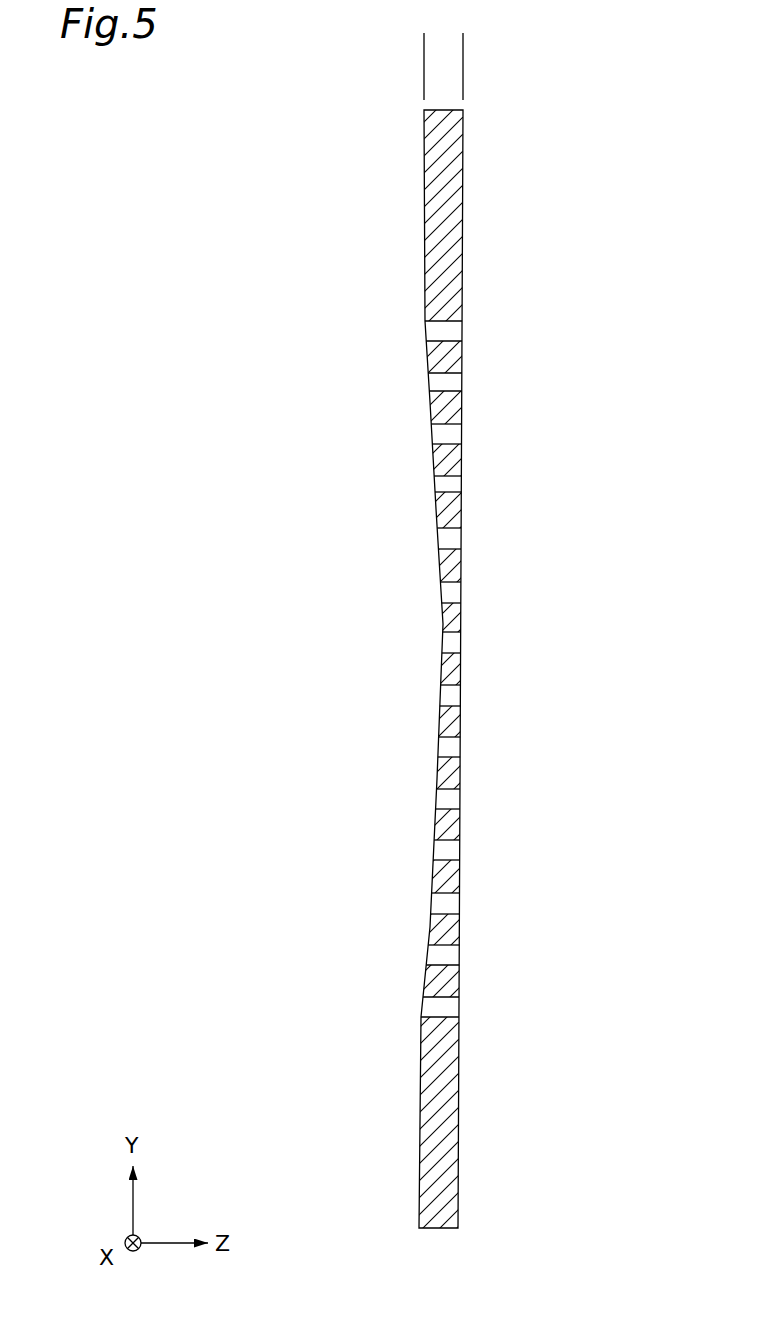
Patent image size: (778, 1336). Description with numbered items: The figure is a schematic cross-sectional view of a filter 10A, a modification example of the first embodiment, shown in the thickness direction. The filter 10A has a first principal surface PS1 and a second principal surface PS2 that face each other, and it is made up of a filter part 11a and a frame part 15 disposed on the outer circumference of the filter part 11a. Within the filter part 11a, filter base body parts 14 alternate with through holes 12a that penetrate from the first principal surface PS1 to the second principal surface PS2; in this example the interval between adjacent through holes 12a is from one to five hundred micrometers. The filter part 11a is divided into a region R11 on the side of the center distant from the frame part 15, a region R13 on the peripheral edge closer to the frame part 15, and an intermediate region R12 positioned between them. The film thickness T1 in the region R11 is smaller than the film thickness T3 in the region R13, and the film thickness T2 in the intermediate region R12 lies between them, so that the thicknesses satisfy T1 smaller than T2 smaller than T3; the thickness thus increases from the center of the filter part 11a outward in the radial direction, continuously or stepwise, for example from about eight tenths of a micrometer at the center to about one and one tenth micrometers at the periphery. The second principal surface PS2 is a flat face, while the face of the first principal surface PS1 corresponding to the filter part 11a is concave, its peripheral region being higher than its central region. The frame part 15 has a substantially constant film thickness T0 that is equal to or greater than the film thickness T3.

The filter 10A is at (347, 108).
The first principal surface PS1 is at (424, 95).
The second principal surface PS2 is at (463, 95).
The filter base body part 14 is at (431, 360).
The through hole 12a is at (442, 436).
The frame part 15 is at (487, 112).
The filter part 11a is at (607, 1016).
The region on the side of the center R11 is at (529, 550).
The intermediate region R12 is at (529, 432).
The region on the peripheral edge R13 is at (487, 432).
The film thickness of the frame part T0 is at (490, 202).
The film thickness in the region on the side of the center T1 is at (488, 624).
The film thickness in the intermediate region T2 is at (488, 509).
The film thickness in the region on the peripheral edge T3 is at (488, 402).